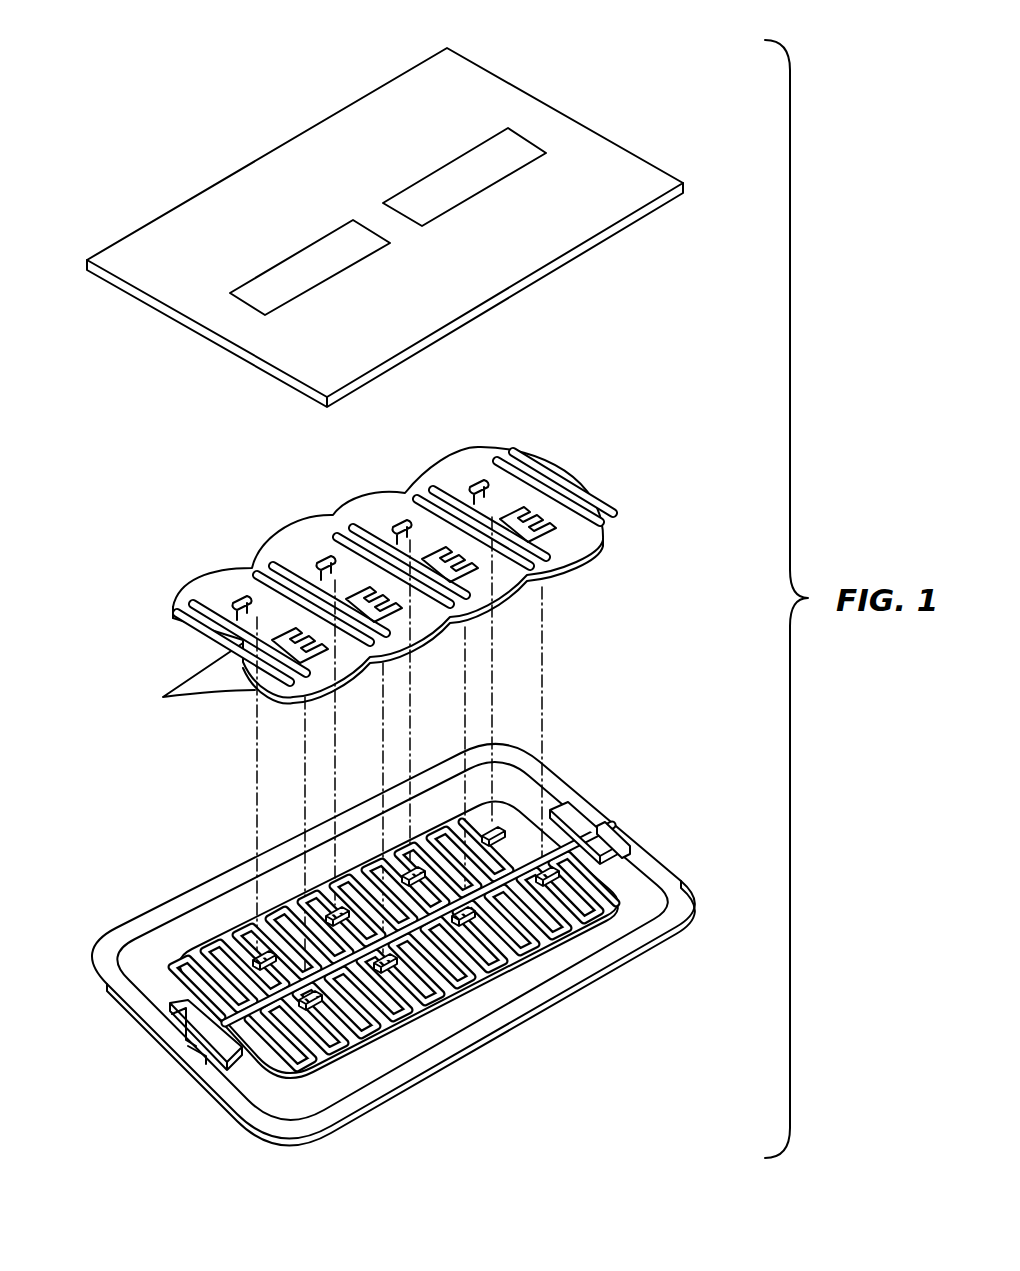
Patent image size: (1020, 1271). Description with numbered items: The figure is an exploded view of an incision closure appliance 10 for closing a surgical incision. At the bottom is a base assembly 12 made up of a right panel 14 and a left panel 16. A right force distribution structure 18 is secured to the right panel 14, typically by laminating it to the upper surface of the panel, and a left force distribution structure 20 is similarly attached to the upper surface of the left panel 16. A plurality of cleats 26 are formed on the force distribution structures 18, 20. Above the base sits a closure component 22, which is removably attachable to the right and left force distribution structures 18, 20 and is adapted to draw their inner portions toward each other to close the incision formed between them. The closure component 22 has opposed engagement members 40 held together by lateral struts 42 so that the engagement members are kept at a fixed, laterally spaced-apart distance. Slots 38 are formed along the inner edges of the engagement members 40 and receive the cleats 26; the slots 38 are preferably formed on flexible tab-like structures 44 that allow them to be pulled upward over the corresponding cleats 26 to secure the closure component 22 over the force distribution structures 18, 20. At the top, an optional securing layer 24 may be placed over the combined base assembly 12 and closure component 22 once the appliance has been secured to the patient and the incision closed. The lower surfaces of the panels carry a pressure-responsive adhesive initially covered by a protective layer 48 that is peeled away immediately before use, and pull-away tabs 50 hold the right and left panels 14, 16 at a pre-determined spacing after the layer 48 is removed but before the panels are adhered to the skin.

The incision closure appliance 10 is at (628, 43).
The base assembly 12 is at (356, 953).
The right panel 14 is at (310, 1090).
The left panel 16 is at (140, 977).
The right force distribution structure 18 is at (440, 993).
The left force distribution structure 20 is at (193, 950).
The closure component 22 is at (376, 554).
The securing layer 24 is at (136, 272).
The cleats 26 is at (563, 860).
The slots 38 is at (478, 490).
The engagement members 40 is at (305, 548).
The lateral struts 42 is at (388, 560).
The flexible tab-like structures 44 is at (560, 528).
The protective layer 48 is at (200, 1067).
The pull-away tabs 50 is at (570, 822).